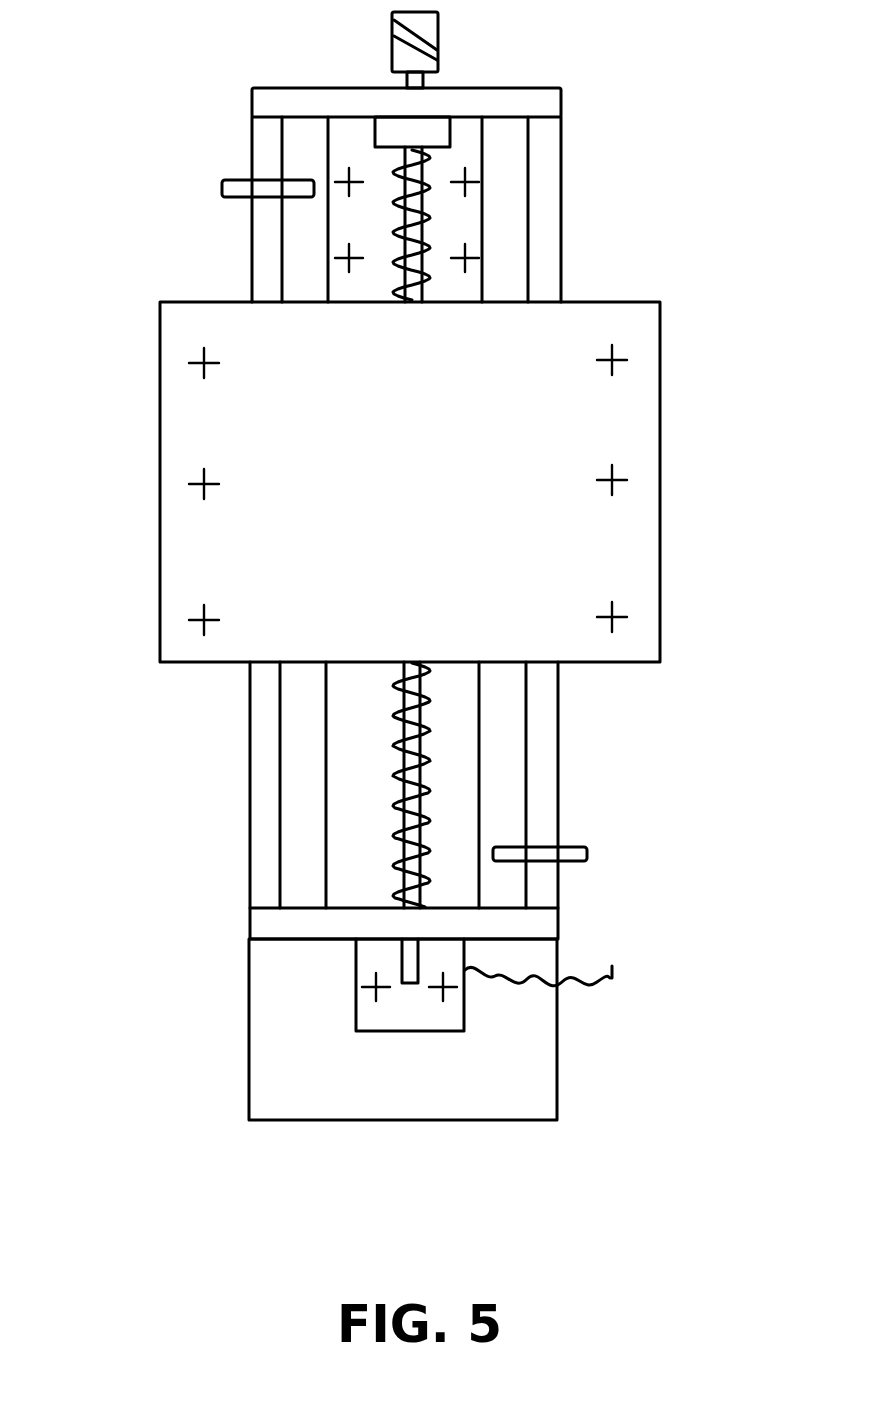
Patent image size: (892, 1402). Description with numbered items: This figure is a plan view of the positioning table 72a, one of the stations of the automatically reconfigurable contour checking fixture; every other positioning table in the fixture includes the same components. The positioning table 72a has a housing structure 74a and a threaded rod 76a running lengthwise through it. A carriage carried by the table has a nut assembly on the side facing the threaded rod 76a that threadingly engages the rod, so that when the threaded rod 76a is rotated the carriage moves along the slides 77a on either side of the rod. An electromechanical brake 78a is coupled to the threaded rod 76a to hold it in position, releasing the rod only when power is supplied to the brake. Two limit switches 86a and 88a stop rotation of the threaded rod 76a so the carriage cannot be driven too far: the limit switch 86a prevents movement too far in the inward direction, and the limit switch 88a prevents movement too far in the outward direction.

The positioning table 72a is at (368, 566).
The housing structure 74a is at (562, 129).
The threaded rod 76a is at (423, 240).
The slides 77a is at (308, 758).
The electromechanical brake 78a is at (416, 1016).
The limit switch 86a is at (587, 847).
The limit switch 88a is at (222, 181).